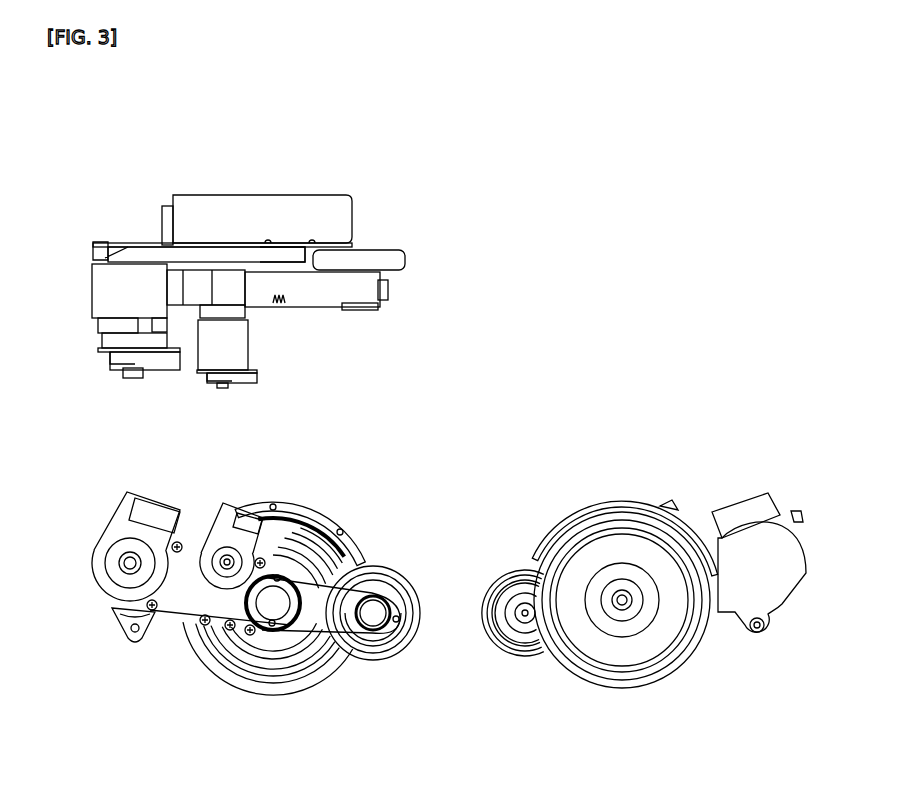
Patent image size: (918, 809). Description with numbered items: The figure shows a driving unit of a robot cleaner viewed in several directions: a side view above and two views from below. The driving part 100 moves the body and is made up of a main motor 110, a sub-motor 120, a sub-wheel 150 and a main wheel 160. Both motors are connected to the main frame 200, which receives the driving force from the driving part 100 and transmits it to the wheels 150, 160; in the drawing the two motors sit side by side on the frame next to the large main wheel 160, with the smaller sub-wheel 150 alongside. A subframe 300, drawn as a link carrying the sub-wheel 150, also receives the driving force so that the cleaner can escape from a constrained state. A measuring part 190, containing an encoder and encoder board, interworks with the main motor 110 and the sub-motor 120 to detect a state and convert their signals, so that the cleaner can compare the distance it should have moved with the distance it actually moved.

The driving part 100 is at (758, 601).
The main motor 110 is at (107, 343).
The sub-motor 120 is at (246, 345).
The sub-wheel 150 is at (407, 258).
The main wheel 160 is at (355, 205).
The measuring part 190 is at (250, 520).
The main frame 200 is at (187, 256).
The subframe 300 is at (384, 315).